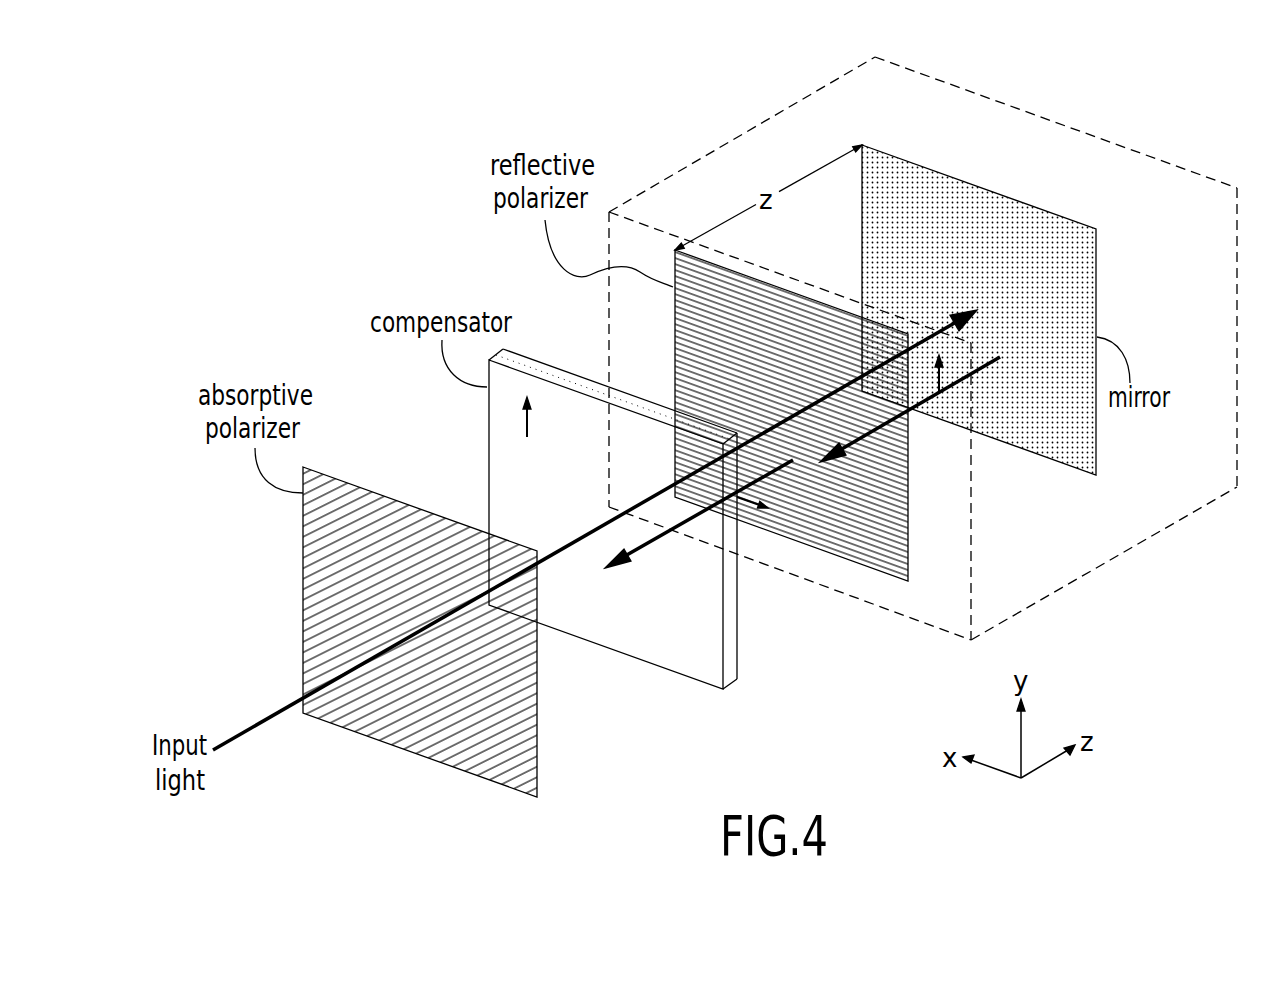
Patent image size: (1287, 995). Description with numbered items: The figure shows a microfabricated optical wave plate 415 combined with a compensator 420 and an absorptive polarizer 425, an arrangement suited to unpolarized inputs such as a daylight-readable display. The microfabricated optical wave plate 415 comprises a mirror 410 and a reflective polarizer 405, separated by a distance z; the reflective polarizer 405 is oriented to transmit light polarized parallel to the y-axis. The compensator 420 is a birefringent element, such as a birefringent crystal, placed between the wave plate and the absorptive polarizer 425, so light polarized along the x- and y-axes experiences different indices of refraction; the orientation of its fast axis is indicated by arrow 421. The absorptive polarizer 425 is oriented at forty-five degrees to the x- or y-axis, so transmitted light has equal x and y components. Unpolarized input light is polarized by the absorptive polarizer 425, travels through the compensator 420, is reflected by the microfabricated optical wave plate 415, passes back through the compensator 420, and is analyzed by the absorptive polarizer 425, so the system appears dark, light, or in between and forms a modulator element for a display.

The reflective polarizer 405 is at (878, 573).
The mirror 410 is at (953, 175).
The microfabricated optical wave plate 415 is at (1062, 588).
The compensator 420 is at (635, 657).
The arrow 421 is at (525, 420).
The absorptive polarizer 425 is at (450, 768).